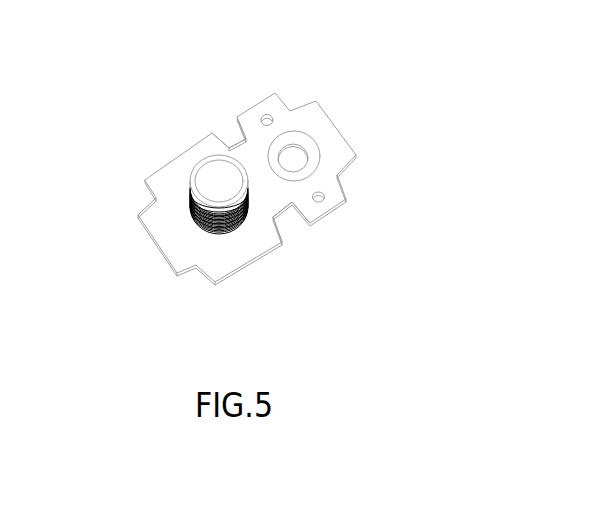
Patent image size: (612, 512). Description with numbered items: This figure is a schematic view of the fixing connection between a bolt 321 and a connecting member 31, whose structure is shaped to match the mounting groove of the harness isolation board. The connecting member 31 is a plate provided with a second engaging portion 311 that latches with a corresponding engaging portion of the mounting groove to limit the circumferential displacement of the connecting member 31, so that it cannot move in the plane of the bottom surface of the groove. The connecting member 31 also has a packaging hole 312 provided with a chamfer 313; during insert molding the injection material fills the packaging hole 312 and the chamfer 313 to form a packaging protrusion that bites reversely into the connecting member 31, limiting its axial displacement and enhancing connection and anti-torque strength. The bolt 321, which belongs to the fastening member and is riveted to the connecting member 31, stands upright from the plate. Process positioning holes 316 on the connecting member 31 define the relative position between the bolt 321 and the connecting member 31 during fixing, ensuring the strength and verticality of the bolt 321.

The connecting member 31 is at (167, 224).
The second engaging portion 311 is at (231, 140).
The packaging hole 312 is at (292, 160).
The chamfer 313 is at (313, 170).
The process positioning hole 316 is at (265, 117).
The bolt 321 is at (213, 180).